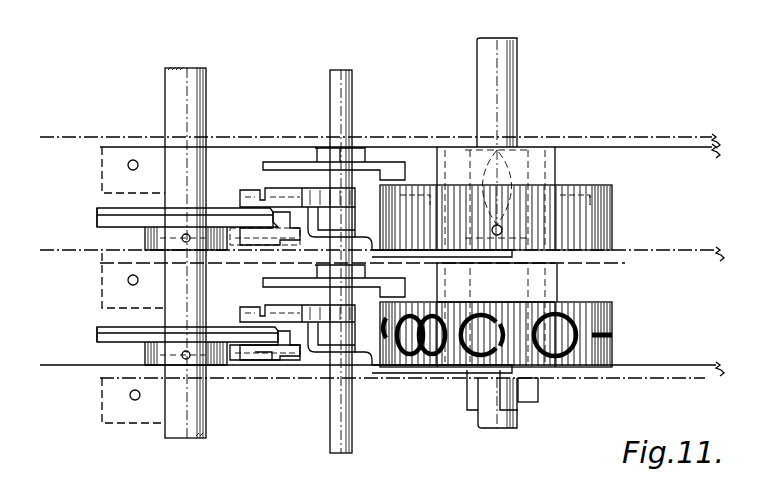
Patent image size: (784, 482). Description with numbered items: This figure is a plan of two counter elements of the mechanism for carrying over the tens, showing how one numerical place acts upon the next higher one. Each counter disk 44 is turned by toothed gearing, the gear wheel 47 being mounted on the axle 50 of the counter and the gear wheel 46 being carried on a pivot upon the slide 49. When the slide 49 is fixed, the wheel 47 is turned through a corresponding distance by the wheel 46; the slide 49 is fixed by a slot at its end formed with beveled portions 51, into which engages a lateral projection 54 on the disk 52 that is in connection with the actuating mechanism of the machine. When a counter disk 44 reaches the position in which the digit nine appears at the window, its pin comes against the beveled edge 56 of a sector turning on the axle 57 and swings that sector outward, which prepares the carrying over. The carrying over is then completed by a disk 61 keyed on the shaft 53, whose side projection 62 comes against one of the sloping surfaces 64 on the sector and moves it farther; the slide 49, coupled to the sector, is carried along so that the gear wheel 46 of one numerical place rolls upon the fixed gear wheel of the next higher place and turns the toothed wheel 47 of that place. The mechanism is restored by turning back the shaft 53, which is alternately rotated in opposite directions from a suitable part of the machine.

The counter disk 44 is at (612, 222).
The gear wheel 46 is at (538, 390).
The gear wheel 47 is at (557, 165).
The slide 49 is at (452, 285).
The axle 50 is at (517, 98).
The beveled portions 51 is at (293, 356).
The disk 52 is at (100, 222).
The shaft 53 is at (183, 430).
The lateral projection 54 is at (272, 356).
The beveled edge 56 is at (405, 170).
The axle 57 is at (350, 426).
The disk 61 is at (97, 210).
The side projection 62 is at (262, 198).
The sloping surfaces 64 is at (271, 286).